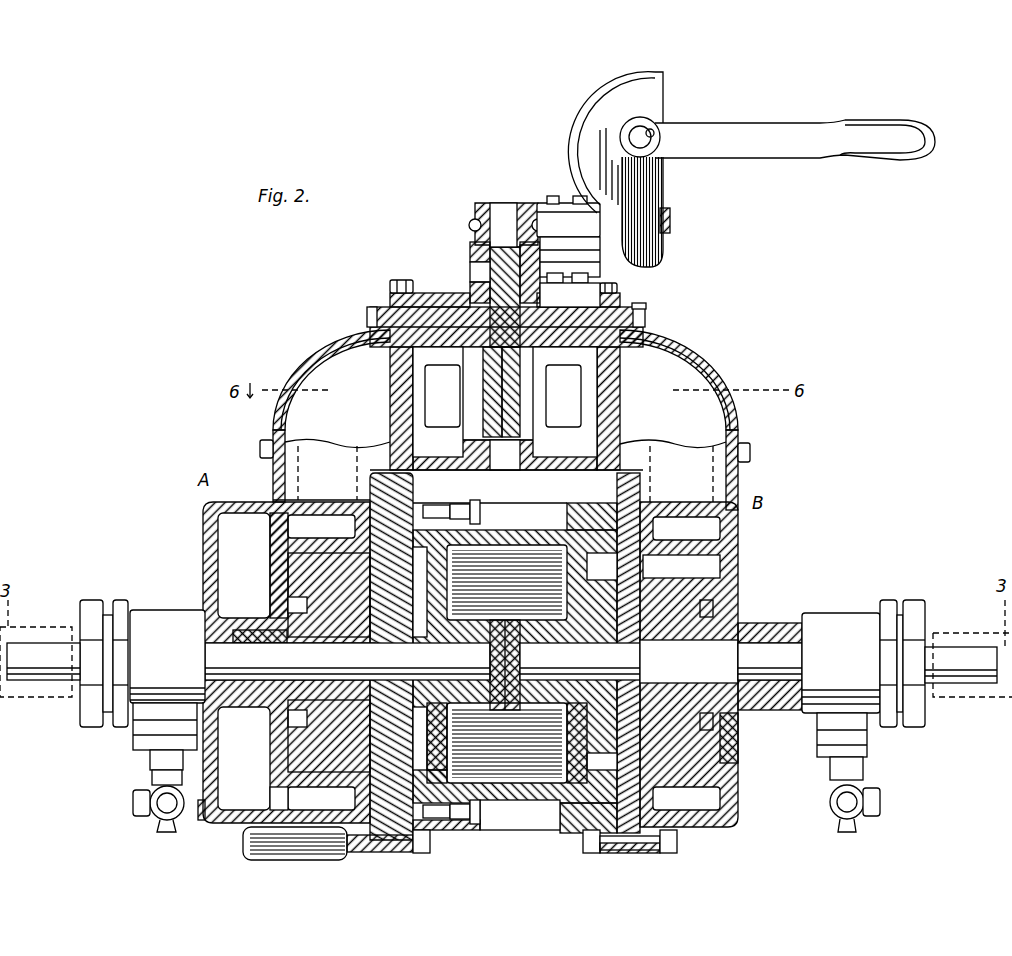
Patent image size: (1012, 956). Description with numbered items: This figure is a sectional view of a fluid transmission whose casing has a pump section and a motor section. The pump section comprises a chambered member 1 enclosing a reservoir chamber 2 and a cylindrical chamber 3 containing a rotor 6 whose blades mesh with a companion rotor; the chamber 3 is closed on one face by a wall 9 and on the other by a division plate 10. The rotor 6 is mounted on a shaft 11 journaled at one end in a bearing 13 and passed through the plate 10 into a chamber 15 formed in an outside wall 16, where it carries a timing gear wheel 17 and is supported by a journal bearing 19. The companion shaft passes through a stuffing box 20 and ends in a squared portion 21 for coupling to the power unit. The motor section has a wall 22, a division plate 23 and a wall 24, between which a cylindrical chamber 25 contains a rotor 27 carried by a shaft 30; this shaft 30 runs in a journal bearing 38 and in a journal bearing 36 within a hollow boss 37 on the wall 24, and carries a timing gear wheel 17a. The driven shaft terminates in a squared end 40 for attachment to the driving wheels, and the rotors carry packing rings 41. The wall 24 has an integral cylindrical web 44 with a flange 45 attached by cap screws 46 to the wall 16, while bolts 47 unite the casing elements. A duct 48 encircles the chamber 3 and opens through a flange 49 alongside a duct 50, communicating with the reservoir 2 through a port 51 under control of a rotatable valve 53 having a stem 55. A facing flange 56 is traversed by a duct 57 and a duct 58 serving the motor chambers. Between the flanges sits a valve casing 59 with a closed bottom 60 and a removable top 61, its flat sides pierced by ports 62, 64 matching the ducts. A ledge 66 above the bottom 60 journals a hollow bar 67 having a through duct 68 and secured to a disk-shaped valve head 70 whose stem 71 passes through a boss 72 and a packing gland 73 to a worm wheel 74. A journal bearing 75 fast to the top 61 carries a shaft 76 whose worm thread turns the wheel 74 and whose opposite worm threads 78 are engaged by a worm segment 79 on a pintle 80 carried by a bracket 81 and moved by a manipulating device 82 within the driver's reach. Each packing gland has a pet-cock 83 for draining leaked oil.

The chambered member 1 is at (205, 537).
The chamber 2 is at (244, 565).
The chamber 3 is at (283, 558).
The rotor 6 is at (305, 753).
The wall or web 9 is at (276, 580).
The division plate 10 is at (413, 499).
The shaft 11 is at (347, 661).
The bearing 13 is at (248, 630).
The chamber 15 is at (432, 727).
The outside wall 16 is at (447, 748).
The gear wheel 17 is at (420, 757).
The timing gear wheel 17a is at (590, 790).
The journal bearing 19 is at (468, 631).
The stuffing box 20 is at (505, 683).
The squared end 21 is at (36, 650).
The wall 22 is at (738, 572).
The division plate 23 is at (617, 795).
The wall 24 is at (572, 602).
The cylindrical chamber 25 is at (681, 567).
The rotor 27 is at (736, 748).
The shaft 30 is at (661, 661).
The journal bearing 36 is at (525, 708).
The hollow boss 37 is at (546, 712).
The journal bearing 38 is at (746, 633).
The squared end 40 is at (925, 640).
The packing rings 41 is at (288, 722).
The cylindrical web 44 is at (492, 797).
The flange 45 is at (465, 826).
The cap screws 46 is at (480, 511).
The bolts 47 is at (422, 846).
The duct 48 is at (321, 662).
The flange 49 is at (390, 305).
The duct 50 is at (325, 416).
The port 51 is at (272, 798).
The rotatable valve 53 is at (295, 842).
The stem 55 is at (203, 818).
The flange 56 is at (630, 303).
The duct 57 is at (685, 420).
The duct 58 is at (686, 663).
The valve casing 59 is at (392, 374).
The closed bottom 60 is at (560, 469).
The removable top 61 is at (620, 288).
The port 62 is at (438, 402).
The port 64 is at (565, 402).
The ledge 66 is at (492, 470).
The hollow bar 67 is at (522, 400).
The duct 68 is at (488, 397).
The valve head 70 is at (646, 321).
The stem 71 is at (478, 263).
The boss 72 is at (478, 281).
The packing gland 73 is at (476, 243).
The worm wheel 74 is at (476, 213).
The journal bearing 75 is at (567, 202).
The shaft 76 is at (577, 271).
The worm threads 78 is at (672, 222).
The worm segment 79 is at (573, 136).
The pintle 80 is at (651, 128).
The bracket 81 is at (668, 249).
The manipulating device 82 is at (768, 150).
The pet-cock 83 is at (160, 814).